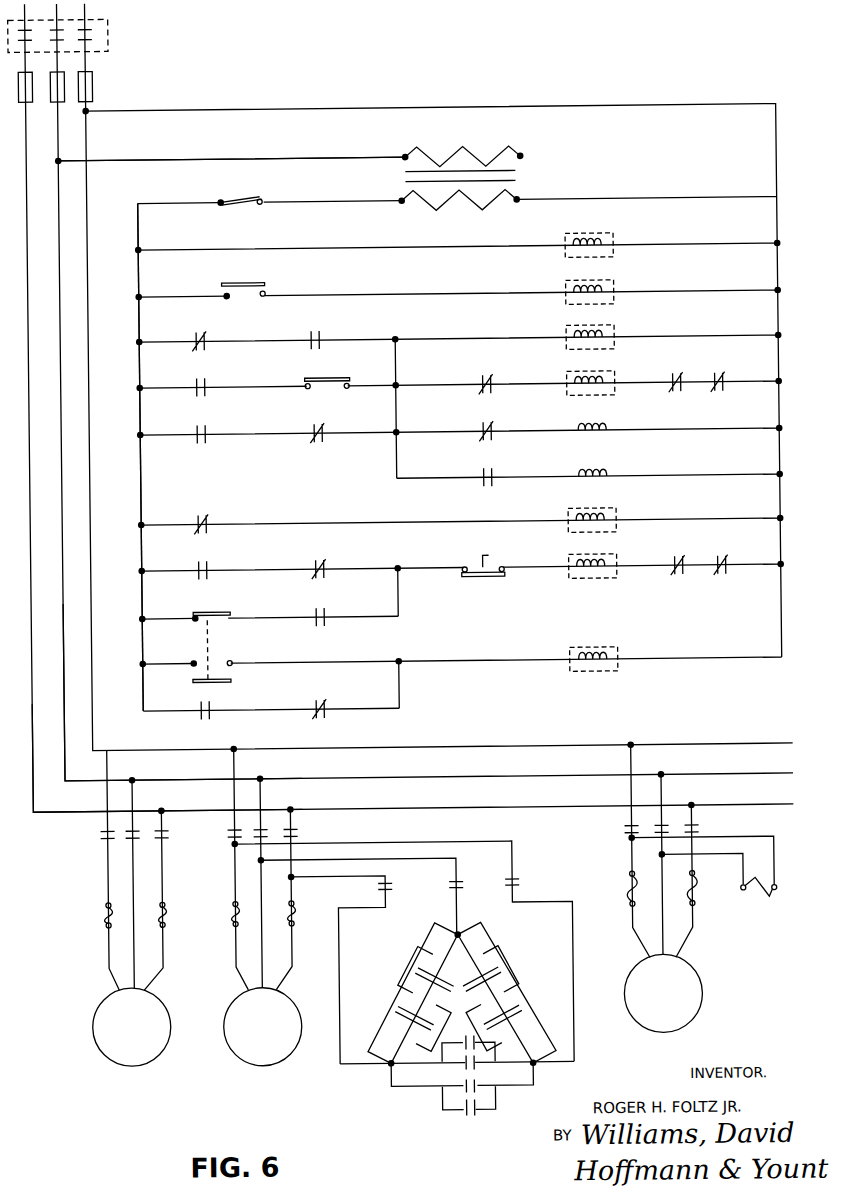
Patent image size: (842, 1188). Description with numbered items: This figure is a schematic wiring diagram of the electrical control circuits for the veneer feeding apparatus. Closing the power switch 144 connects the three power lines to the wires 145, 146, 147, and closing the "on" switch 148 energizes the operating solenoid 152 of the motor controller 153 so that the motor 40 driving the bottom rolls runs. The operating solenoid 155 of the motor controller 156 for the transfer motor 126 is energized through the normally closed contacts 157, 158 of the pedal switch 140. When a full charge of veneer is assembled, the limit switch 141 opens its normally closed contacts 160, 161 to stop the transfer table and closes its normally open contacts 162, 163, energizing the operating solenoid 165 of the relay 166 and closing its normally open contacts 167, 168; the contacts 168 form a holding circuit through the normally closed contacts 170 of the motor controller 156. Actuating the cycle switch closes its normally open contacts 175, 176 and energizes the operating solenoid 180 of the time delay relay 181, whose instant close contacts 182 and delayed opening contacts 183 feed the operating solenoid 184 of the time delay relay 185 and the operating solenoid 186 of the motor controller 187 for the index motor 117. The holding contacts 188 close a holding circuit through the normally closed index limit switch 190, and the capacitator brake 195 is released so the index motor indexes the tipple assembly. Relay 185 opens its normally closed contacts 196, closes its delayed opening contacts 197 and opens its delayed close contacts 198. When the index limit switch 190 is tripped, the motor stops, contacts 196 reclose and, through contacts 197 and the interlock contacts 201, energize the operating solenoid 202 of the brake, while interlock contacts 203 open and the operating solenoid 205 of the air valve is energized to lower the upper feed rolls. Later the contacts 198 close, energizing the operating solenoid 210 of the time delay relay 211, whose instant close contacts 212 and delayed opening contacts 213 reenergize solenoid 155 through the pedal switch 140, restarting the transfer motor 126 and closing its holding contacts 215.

The motor 40 is at (131, 1064).
The index motor 117 is at (268, 1064).
The transfer motor 126 is at (698, 995).
The pedal switch 140 is at (489, 556).
The limit switch 141 is at (211, 646).
The power switch 144 is at (114, 40).
The wire 145 is at (64, 814).
The wire 146 is at (328, 160).
The wire 147 is at (142, 198).
The on switch 148 is at (232, 196).
The operating solenoid 152 is at (569, 236).
The motor controller 153 is at (617, 233).
The operating solenoid 155 is at (615, 561).
The motor controller 156 is at (578, 580).
The normally closed contact 157 is at (462, 568).
The normally closed contact 158 is at (506, 568).
The normally closed contact 160 is at (195, 621).
The normally closed contact 161 is at (232, 612).
The normally open contact 162 is at (193, 666).
The normally open contact 163 is at (231, 666).
The operating solenoid 165 is at (606, 655).
The relay 166 is at (598, 675).
The normally open contact 167 is at (488, 485).
The normally open contact 168 is at (205, 720).
The normally closed contact 170 is at (247, 281).
The normally open contact 175 is at (226, 297).
The normally open contact 176 is at (265, 296).
The operating solenoid 180 is at (605, 284).
The time delay relay 181 is at (569, 296).
The instant close contact 182 is at (318, 331).
The delayed opening contact 183 is at (207, 345).
The operating solenoid 184 is at (610, 329).
The time delay relay 185 is at (569, 345).
The operating solenoid 186 is at (610, 375).
The motor controller 187 is at (569, 394).
The holding contact 188 is at (208, 393).
The index limit switch 190 is at (330, 377).
The capacitator brake 195 is at (497, 956).
The normally closed contact 196 is at (320, 441).
The normally open contact 197 is at (208, 441).
The normally closed contact 198 is at (206, 519).
The interlock contact 201 is at (490, 442).
The operating solenoid 202 is at (604, 429).
The interlock contact 203 is at (487, 376).
The operating solenoid 205 is at (613, 460).
The operating solenoid 210 is at (605, 515).
The time delay relay 211 is at (569, 509).
The instant close contact 212 is at (207, 560).
The delayed opening contact 213 is at (320, 559).
The holding contact 215 is at (322, 609).